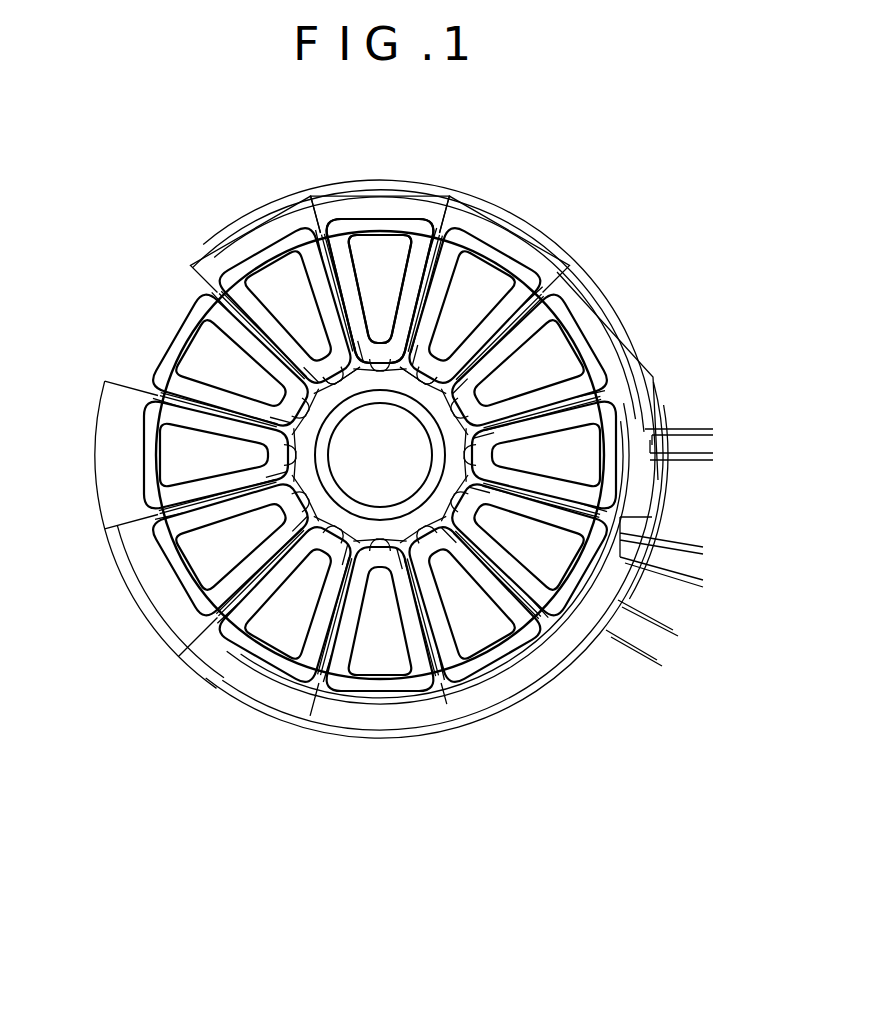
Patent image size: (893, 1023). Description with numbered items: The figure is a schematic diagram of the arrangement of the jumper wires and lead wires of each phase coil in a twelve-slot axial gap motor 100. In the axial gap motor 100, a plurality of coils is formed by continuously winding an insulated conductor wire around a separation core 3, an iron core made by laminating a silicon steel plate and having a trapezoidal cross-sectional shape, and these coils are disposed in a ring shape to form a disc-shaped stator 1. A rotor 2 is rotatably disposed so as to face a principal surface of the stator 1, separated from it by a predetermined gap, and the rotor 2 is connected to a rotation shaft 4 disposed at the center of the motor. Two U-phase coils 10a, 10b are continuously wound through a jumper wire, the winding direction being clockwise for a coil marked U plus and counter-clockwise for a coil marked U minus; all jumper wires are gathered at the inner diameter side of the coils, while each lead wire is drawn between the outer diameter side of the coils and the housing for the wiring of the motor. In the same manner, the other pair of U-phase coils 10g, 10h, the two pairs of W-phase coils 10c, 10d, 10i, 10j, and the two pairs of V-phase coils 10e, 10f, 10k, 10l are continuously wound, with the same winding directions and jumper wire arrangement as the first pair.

The stator 1 is at (328, 212).
The rotor 2 is at (150, 403).
The separation core 3 is at (373, 243).
The rotation shaft 4 is at (388, 478).
The U-phase coil 10a is at (368, 700).
The U-phase coil 10b is at (263, 668).
The W-phase coil 10c is at (170, 583).
The W-phase coil 10d is at (140, 456).
The V-phase coil 10e is at (170, 334).
The V-phase coil 10f is at (255, 250).
The U-phase coil 10g is at (406, 216).
The U-phase coil 10h is at (498, 243).
The W-phase coil 10i is at (596, 338).
The W-phase coil 10j is at (622, 466).
The V-phase coil 10k is at (633, 588).
The V-phase coil 10l is at (500, 666).
The axial gap motor 100 is at (167, 802).